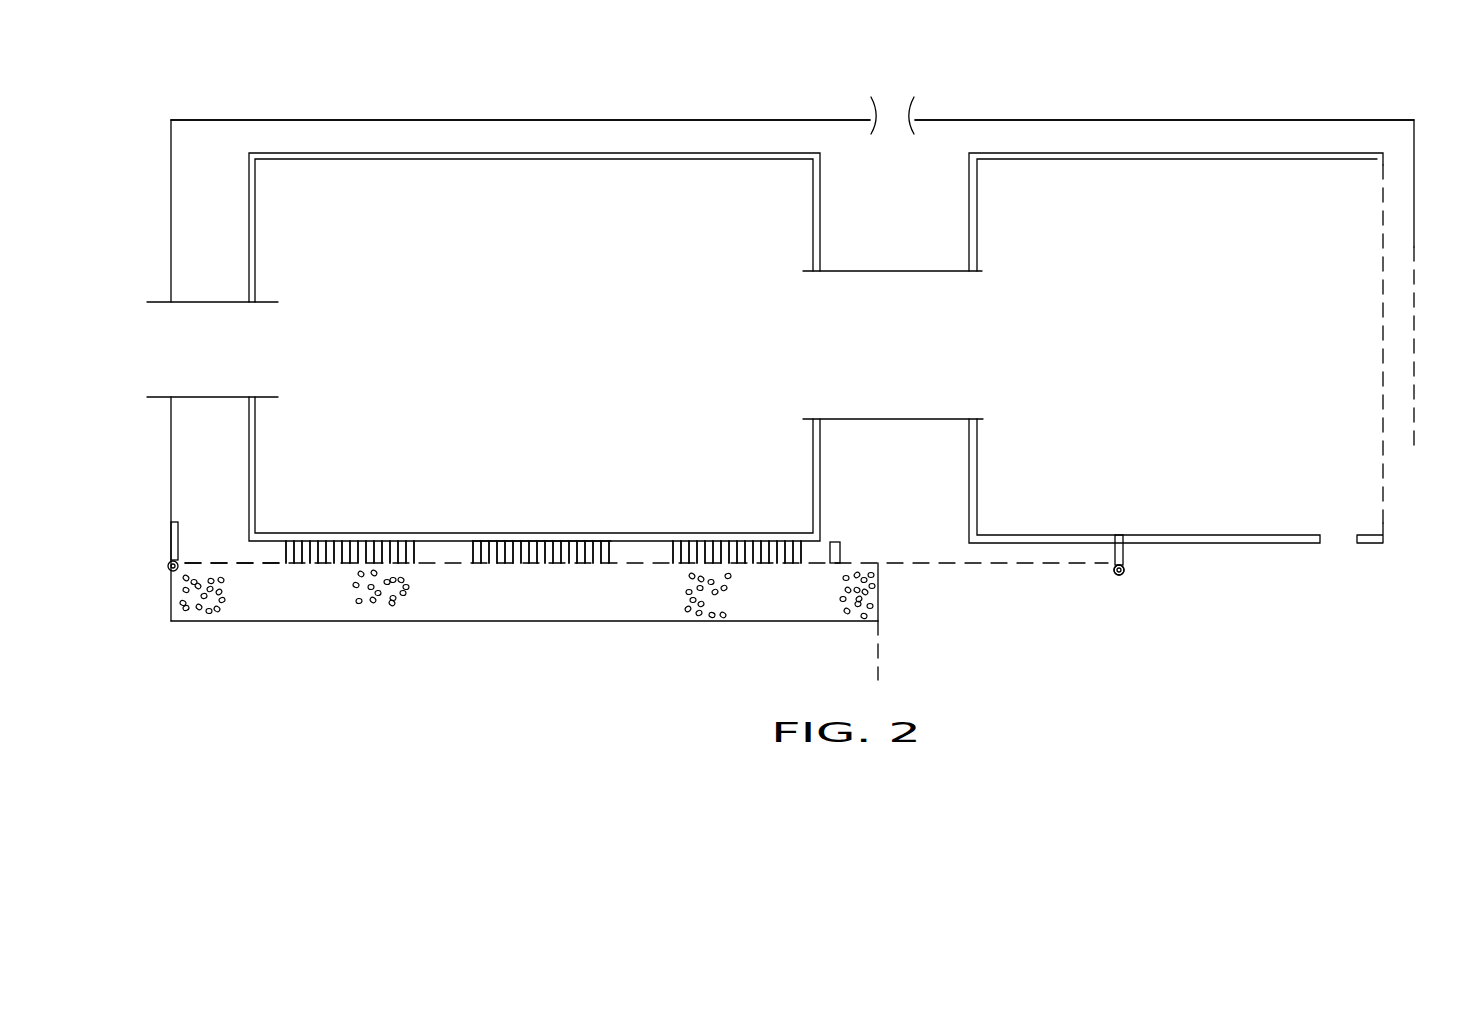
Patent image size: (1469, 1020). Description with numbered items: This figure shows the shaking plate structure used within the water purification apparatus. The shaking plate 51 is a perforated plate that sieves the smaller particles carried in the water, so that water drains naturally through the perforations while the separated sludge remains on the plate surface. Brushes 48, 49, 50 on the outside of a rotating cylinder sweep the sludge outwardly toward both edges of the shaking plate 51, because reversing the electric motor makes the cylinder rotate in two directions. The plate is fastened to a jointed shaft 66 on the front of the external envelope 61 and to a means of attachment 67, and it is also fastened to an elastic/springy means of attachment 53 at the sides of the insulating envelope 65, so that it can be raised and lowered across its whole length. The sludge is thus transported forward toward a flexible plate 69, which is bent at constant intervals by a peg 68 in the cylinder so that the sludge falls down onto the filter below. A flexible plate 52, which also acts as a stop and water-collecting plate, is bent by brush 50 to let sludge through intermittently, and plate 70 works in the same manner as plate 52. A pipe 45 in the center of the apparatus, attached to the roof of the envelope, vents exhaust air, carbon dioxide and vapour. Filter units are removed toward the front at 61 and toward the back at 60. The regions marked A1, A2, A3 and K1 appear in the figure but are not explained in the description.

The central pipe 45 is at (895, 107).
The brush 48 is at (353, 557).
The brush 49 is at (565, 557).
The brush 50 is at (755, 560).
The shaking plate 51 is at (223, 562).
The flexible plate 52 is at (837, 563).
The elastic/springy means of attachment 53 is at (1119, 575).
The back of the apparatus 60 is at (1414, 208).
The external envelope 61 is at (171, 200).
The insulating envelope 65 is at (207, 140).
The jointed shaft 66 is at (167, 565).
The means of attachment 67 is at (171, 537).
The peg 68 is at (1125, 540).
The flexible plate 69 is at (1125, 556).
The plate 70 is at (507, 557).
The first air chamber A1 is at (567, 182).
The connecting passage A2 is at (888, 317).
The lower air passage A3 is at (1008, 565).
The storage compartment K1 is at (1215, 188).